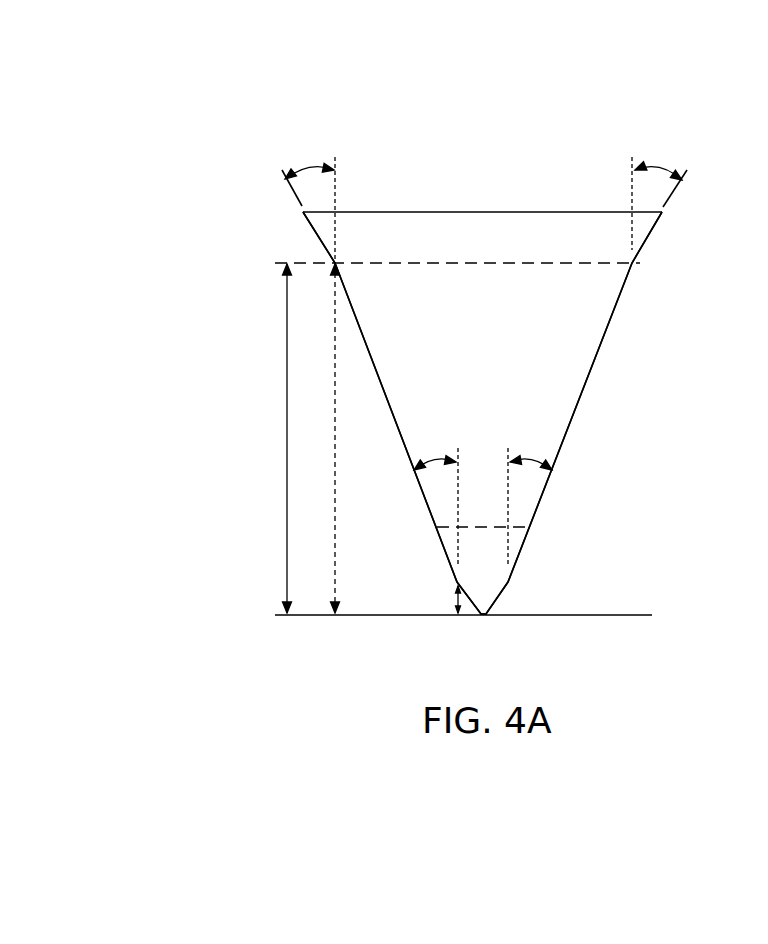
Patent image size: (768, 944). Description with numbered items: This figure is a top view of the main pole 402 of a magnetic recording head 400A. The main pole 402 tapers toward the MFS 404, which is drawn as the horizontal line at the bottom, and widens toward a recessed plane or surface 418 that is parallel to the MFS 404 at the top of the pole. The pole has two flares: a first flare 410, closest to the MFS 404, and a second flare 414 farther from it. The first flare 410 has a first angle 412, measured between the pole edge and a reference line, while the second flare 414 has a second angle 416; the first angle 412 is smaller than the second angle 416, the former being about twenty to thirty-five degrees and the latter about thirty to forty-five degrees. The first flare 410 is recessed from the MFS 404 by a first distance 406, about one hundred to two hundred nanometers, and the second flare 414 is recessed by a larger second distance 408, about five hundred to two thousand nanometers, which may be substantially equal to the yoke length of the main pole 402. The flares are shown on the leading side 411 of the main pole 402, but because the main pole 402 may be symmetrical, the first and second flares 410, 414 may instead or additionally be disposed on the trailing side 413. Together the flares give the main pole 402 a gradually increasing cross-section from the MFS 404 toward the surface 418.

The magnetic recording head 400A is at (427, 361).
The main pole 402 is at (497, 361).
The MFS 404 is at (528, 616).
The first distance 406 is at (455, 602).
The second distance 408 is at (358, 497).
The first flare 410 is at (455, 581).
The leading side 411 is at (622, 397).
The first angle 412 is at (432, 462).
The trailing side 413 is at (277, 397).
The second flare 414 is at (338, 266).
The second angle 416 is at (308, 168).
The surface 418 is at (485, 212).